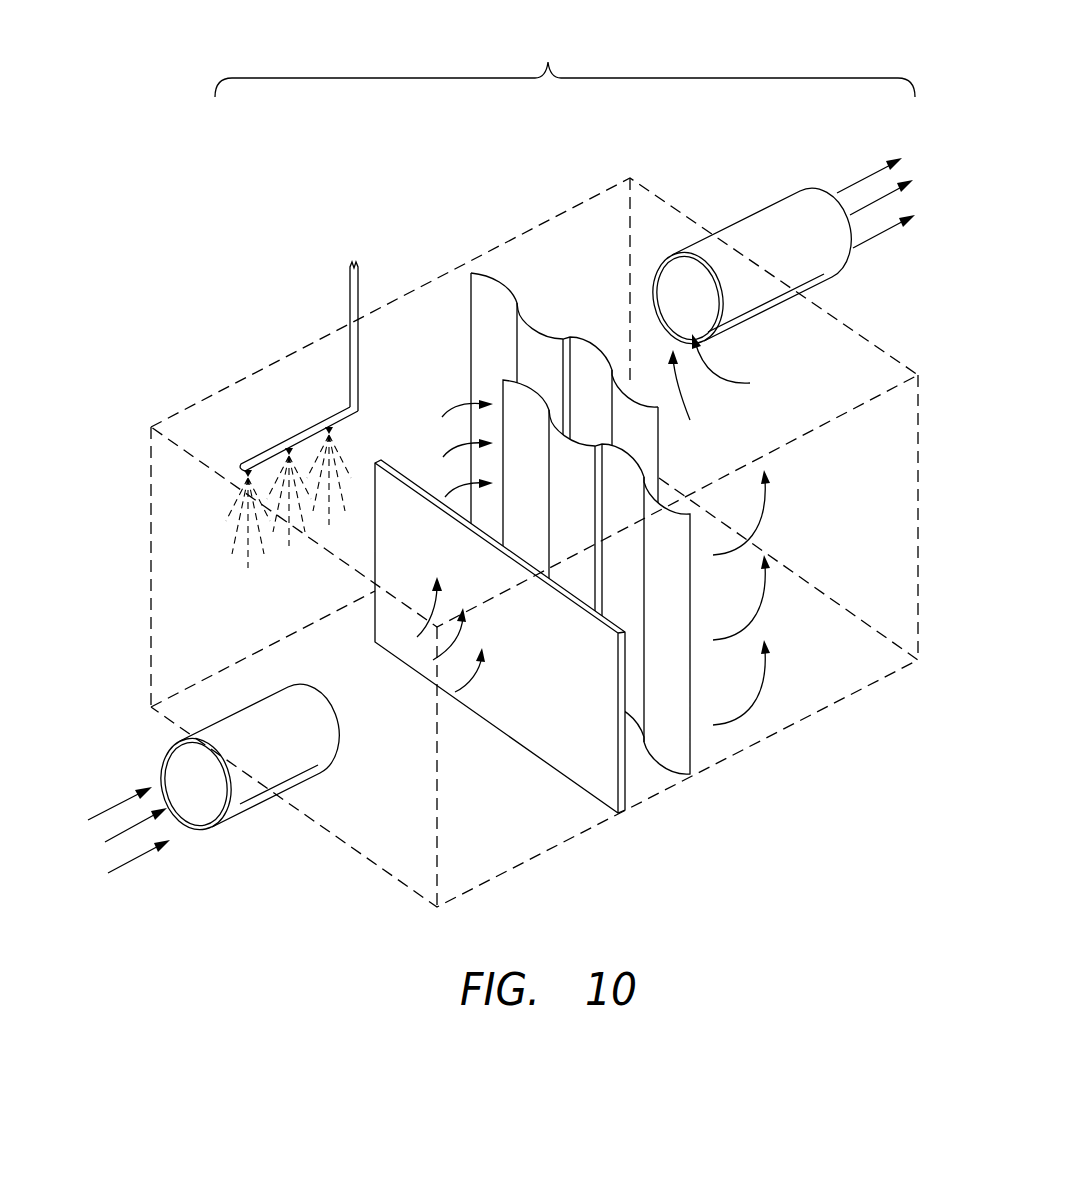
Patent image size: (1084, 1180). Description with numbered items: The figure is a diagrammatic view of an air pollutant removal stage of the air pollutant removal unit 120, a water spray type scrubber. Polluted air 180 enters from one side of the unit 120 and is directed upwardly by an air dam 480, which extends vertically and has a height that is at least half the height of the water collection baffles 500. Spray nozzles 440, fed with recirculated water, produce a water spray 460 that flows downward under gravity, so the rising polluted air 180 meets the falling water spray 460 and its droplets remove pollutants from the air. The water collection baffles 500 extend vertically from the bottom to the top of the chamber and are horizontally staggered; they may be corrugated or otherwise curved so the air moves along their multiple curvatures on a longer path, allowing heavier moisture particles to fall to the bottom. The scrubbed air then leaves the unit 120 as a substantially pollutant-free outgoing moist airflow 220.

The air pollutant removal unit 120 is at (565, 56).
The polluted air 180 is at (140, 757).
The outgoing moist airflow 220 is at (868, 149).
The spray nozzles 440 is at (246, 473).
The water spray 460 is at (238, 528).
The air dam 480 is at (625, 798).
The water collection baffles 500 is at (688, 745).